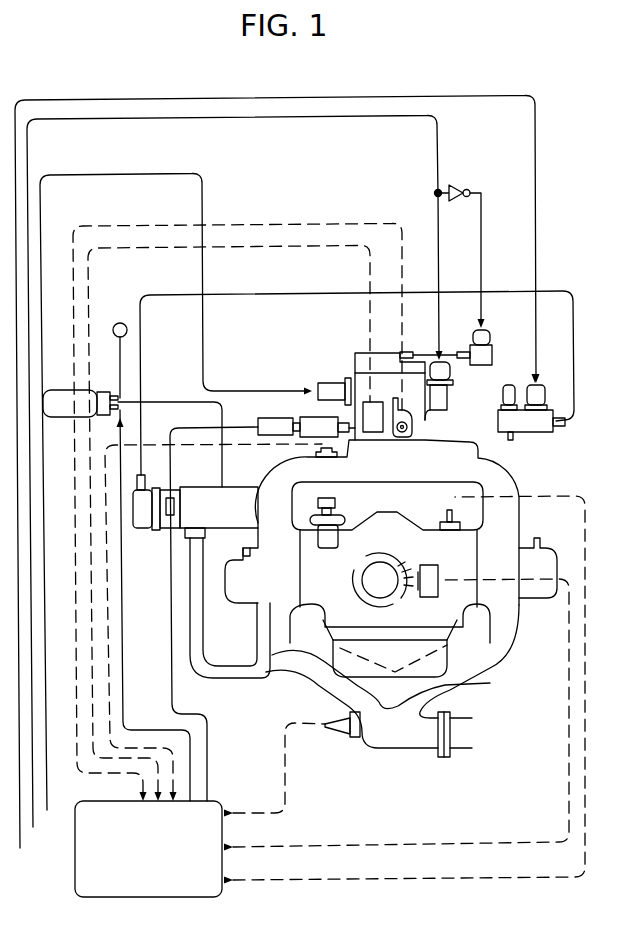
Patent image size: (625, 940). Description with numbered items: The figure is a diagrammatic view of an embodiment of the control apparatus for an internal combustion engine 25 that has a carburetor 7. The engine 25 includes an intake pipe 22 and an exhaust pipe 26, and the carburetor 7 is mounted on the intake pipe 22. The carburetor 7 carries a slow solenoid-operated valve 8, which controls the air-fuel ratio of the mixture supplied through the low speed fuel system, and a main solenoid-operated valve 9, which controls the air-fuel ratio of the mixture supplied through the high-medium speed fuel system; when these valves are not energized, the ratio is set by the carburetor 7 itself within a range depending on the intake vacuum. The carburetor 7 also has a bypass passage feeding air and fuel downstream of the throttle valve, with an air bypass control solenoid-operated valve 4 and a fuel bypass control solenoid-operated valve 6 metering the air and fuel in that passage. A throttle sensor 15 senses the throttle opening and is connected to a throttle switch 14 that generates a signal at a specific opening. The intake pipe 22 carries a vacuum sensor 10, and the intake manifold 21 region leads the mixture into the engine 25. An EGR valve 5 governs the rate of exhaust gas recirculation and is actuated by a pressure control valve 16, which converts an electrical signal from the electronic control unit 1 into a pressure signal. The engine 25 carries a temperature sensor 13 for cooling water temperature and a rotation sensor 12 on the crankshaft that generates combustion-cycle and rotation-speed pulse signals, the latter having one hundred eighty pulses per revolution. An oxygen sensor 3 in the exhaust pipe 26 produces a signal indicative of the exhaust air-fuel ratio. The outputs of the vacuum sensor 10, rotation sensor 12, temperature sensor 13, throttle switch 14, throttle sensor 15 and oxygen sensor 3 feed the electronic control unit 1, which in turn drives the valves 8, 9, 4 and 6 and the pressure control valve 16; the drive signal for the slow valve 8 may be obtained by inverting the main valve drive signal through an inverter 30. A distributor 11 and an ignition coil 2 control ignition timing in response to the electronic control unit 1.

The electronic control unit 1 is at (157, 897).
The ignition coil 2 is at (93, 390).
The O2 sensor 3 is at (342, 735).
The air bypass control solenoid-operated valve 4 is at (306, 418).
The EGR valve 5 is at (138, 528).
The fuel bypass control solenoid-operated valve 6 is at (334, 383).
The carburetor 7 is at (356, 353).
The slow solenoid-operated valve 8 is at (487, 334).
The main solenoid-operated valve 9 is at (450, 374).
The vacuum sensor 10 is at (318, 452).
The distributor 11 is at (336, 505).
The rotation sensor 12 is at (432, 565).
The temperature sensor 13 is at (444, 515).
The throttle switch 14 is at (412, 427).
The throttle sensor 15 is at (372, 432).
The pressure control valve 16 is at (538, 432).
The intake manifold 21 is at (273, 503).
The intake pipe 22 is at (505, 474).
The internal combustion engine 25 is at (447, 615).
The exhaust pipe 26 is at (388, 745).
The inverter 30 is at (461, 184).